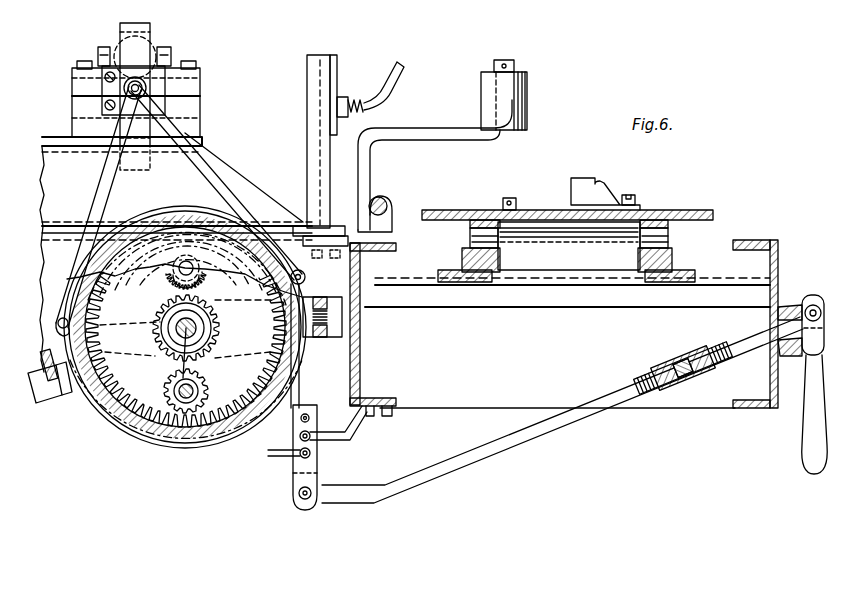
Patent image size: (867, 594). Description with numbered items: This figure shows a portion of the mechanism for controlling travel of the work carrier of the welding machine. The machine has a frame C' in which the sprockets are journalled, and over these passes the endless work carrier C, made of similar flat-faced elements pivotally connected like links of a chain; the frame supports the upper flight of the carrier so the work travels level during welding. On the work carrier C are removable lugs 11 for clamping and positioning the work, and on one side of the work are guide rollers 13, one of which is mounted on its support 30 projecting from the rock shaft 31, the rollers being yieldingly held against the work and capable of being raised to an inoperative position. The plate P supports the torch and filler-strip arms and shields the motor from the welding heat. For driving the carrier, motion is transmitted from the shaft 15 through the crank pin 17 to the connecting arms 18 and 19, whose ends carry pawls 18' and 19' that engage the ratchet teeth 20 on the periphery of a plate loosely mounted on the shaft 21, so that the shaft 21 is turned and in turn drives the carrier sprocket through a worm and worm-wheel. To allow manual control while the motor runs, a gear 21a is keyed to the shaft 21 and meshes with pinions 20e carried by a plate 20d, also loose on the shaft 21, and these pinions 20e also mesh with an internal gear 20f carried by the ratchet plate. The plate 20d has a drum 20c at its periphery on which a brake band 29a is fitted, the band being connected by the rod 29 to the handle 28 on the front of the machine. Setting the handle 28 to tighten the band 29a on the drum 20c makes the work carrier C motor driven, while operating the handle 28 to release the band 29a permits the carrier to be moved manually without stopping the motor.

The shaft 15 is at (146, 80).
The crank pin 17 is at (148, 70).
The plate P is at (315, 72).
The connecting arm 18 is at (103, 211).
The connecting arm 19 is at (218, 184).
The pawl 19' is at (357, 317).
The pawl 18' is at (50, 386).
The ratchet teeth 20 is at (98, 420).
The drum 20c is at (190, 446).
The plate 20d is at (187, 264).
The pinions 20e is at (170, 283).
The internal gear 20f is at (163, 338).
The shaft 21 is at (183, 378).
The gear 21a is at (212, 324).
The handle 28 is at (804, 436).
The rod 29 is at (492, 458).
The brake band 29a is at (252, 450).
The support 30 is at (460, 136).
The rock shaft 31 is at (390, 200).
The guide rollers 13 is at (530, 108).
The removable lugs 11 is at (568, 186).
The work carrier C is at (567, 209).
The frame C' is at (570, 319).